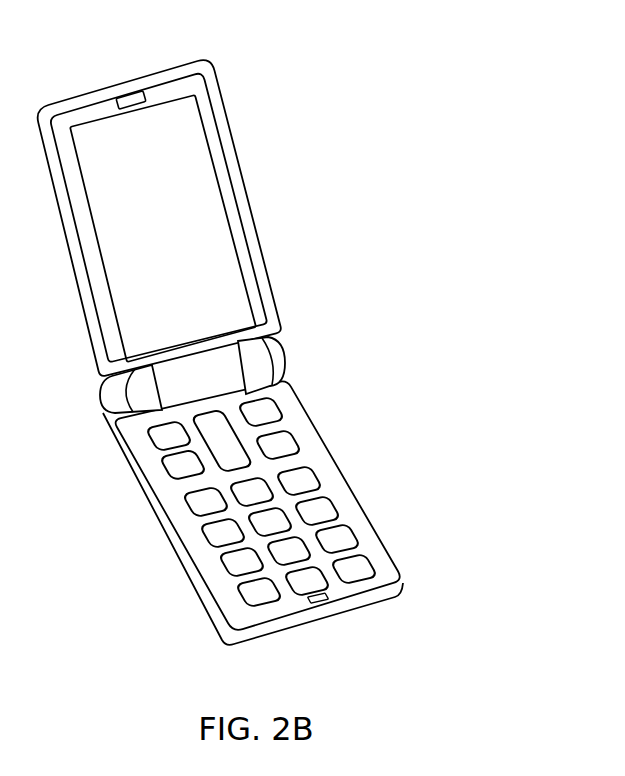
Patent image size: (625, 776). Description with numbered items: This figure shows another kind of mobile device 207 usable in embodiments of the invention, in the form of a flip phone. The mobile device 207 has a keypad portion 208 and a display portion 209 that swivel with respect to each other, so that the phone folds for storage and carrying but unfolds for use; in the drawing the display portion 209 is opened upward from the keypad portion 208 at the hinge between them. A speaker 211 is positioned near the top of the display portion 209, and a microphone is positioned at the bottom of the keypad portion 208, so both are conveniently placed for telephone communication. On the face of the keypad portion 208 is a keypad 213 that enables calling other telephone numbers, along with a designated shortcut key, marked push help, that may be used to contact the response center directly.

The mobile device 207 is at (220, 354).
The keypad portion 208 is at (231, 531).
The display portion 209 is at (193, 194).
The speaker 211 is at (130, 100).
The keypad 213 is at (178, 517).